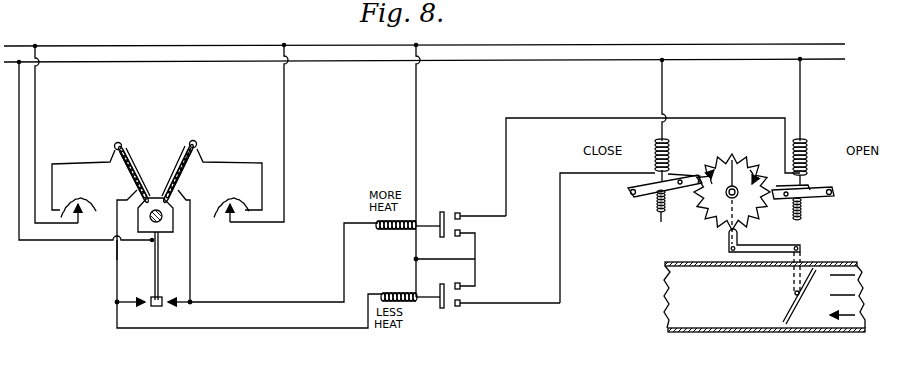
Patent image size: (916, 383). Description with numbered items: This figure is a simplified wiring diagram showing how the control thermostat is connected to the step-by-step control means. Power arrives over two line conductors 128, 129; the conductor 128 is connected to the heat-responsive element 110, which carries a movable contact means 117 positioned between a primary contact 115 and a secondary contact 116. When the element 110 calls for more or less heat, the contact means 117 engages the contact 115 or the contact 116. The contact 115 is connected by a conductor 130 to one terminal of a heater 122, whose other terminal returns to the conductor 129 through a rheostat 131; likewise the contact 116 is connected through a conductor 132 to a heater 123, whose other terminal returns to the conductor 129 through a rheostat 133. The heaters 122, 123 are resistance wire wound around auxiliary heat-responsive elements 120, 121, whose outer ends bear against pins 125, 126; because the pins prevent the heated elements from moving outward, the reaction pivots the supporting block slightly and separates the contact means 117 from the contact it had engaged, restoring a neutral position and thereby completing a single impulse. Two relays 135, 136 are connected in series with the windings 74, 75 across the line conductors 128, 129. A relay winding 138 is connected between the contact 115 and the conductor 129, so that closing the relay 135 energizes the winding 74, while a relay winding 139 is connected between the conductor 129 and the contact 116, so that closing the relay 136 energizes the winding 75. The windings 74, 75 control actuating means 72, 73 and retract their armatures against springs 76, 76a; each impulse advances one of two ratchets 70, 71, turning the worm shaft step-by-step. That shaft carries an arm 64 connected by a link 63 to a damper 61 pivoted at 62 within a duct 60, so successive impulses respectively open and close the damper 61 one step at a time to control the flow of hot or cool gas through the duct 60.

The line conductor 129 is at (172, 45).
The line conductor 128 is at (160, 62).
The pin 126 is at (116, 142).
The pin 125 is at (200, 138).
The auxiliary heat-responsive element 121 is at (108, 151).
The heater 122 is at (183, 150).
The heater 123 is at (128, 160).
The auxiliary heat-responsive element 120 is at (205, 148).
The rheostat 133 is at (83, 196).
The rheostat 131 is at (232, 196).
The conductor 130 is at (192, 260).
The heat-responsive element 110 is at (154, 258).
The movable contact means 117 is at (164, 300).
The conductor 132 is at (116, 280).
The secondary contact 116 is at (142, 306).
The primary contact 115 is at (176, 306).
The relay 135 is at (451, 206).
The relay 136 is at (450, 312).
The relay winding 138 is at (394, 230).
The relay winding 139 is at (388, 290).
The winding 75 is at (672, 150).
The winding 74 is at (810, 150).
The ratchet 70 is at (732, 180).
The ratchet 71 is at (748, 160).
The actuating means 73 is at (640, 196).
The actuating means 72 is at (825, 184).
The spring 76 is at (804, 214).
The spring 76a is at (656, 215).
The arm 64 is at (760, 250).
The duct 60 is at (830, 262).
The damper 61 is at (792, 332).
The link 63 is at (794, 282).
The pivot 62 is at (795, 295).